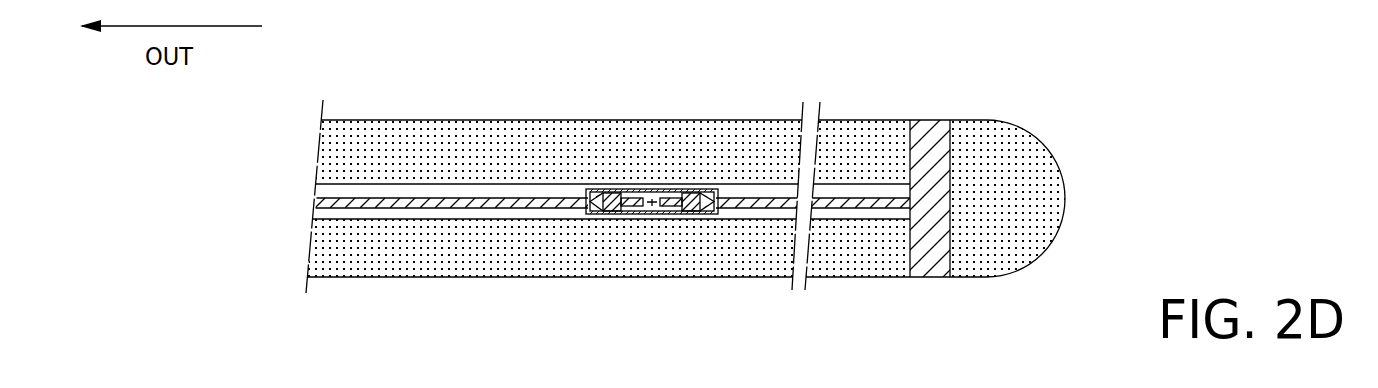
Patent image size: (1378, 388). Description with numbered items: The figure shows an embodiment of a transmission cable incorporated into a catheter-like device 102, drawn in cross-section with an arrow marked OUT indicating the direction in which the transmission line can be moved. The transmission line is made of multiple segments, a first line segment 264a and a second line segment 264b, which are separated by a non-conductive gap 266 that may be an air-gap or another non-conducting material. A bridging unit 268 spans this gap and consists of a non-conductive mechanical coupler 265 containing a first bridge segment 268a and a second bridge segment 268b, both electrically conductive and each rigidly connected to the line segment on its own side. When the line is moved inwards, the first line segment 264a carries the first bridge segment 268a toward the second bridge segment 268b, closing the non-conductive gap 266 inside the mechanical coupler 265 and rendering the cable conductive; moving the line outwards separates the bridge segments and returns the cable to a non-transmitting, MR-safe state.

The catheter-like device 102 is at (352, 260).
The first line segment 264a is at (449, 211).
The second line segment 264b is at (748, 212).
The non-conductive mechanical coupler 265 is at (597, 213).
The non-conductive gap 266 is at (652, 216).
The bridging unit 268 is at (718, 180).
The first bridge segment 268a is at (627, 215).
The second bridge segment 268b is at (672, 215).